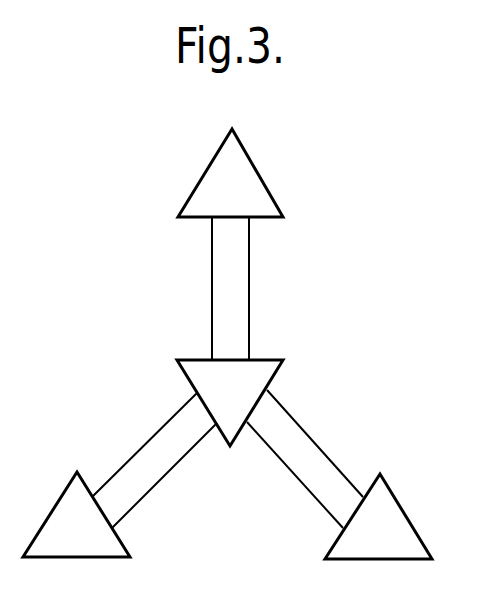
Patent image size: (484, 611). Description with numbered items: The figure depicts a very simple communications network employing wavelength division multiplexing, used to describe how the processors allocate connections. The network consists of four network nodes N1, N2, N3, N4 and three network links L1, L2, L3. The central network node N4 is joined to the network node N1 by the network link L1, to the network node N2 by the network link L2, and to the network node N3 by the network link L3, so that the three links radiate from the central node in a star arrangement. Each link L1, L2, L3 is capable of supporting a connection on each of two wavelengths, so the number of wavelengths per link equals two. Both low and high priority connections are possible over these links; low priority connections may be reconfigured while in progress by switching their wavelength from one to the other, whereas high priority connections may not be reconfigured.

The network node N1 is at (230, 173).
The network node N2 is at (76, 514).
The network node N3 is at (378, 516).
The network node N4 is at (230, 403).
The network link L1 is at (243, 288).
The network link L2 is at (154, 460).
The network link L3 is at (305, 459).